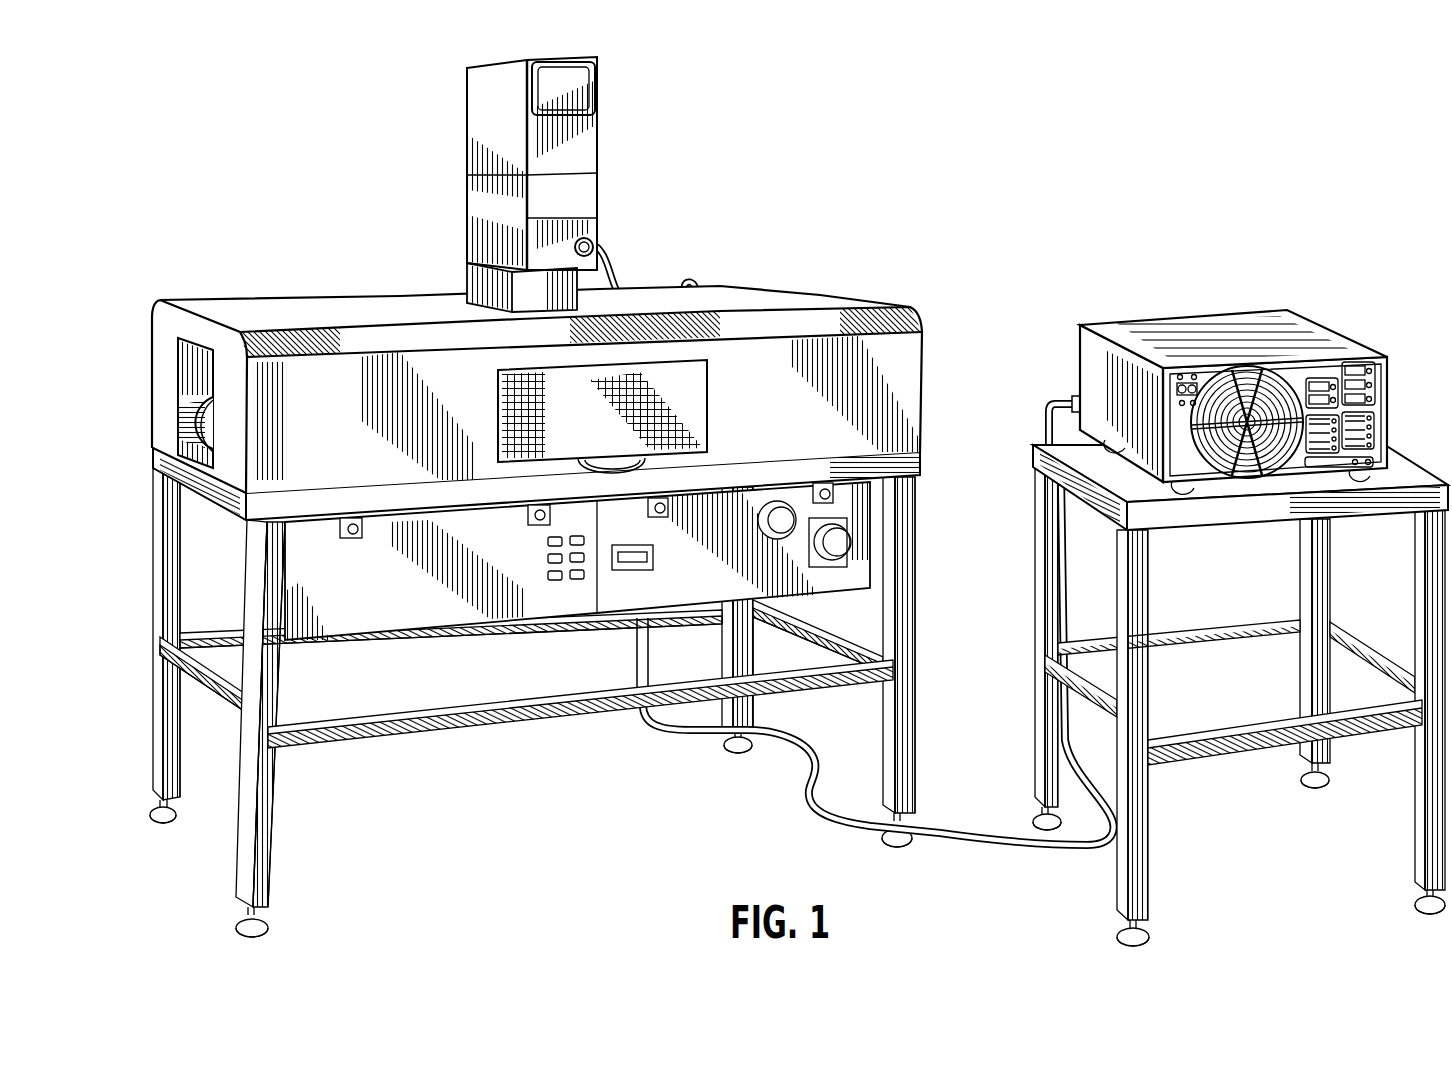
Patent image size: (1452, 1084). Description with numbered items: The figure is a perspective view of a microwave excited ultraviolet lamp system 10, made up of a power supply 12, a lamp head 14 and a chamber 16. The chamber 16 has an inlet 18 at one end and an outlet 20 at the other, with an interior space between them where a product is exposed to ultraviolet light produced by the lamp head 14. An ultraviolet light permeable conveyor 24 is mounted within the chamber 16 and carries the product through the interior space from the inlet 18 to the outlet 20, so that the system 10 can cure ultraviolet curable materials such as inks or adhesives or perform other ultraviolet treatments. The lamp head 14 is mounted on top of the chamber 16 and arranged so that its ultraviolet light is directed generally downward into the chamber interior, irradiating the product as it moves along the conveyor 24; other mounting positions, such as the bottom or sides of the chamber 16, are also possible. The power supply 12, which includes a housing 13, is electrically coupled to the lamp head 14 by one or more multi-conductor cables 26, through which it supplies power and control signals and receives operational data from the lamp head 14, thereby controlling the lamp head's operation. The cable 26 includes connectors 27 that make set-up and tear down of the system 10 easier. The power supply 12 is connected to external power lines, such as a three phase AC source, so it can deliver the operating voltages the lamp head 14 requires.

The microwave excited ultraviolet lamp system 10 is at (906, 148).
The power supply 12 is at (1310, 317).
The housing 13 is at (1226, 318).
The lamp head 14 is at (465, 97).
The chamber 16 is at (298, 298).
The inlet 18 is at (177, 368).
The outlet 20 is at (925, 366).
The ultraviolet light permeable conveyor 24 is at (168, 421).
The multi-conductor cable 26 is at (660, 300).
The connector 27 is at (597, 240).